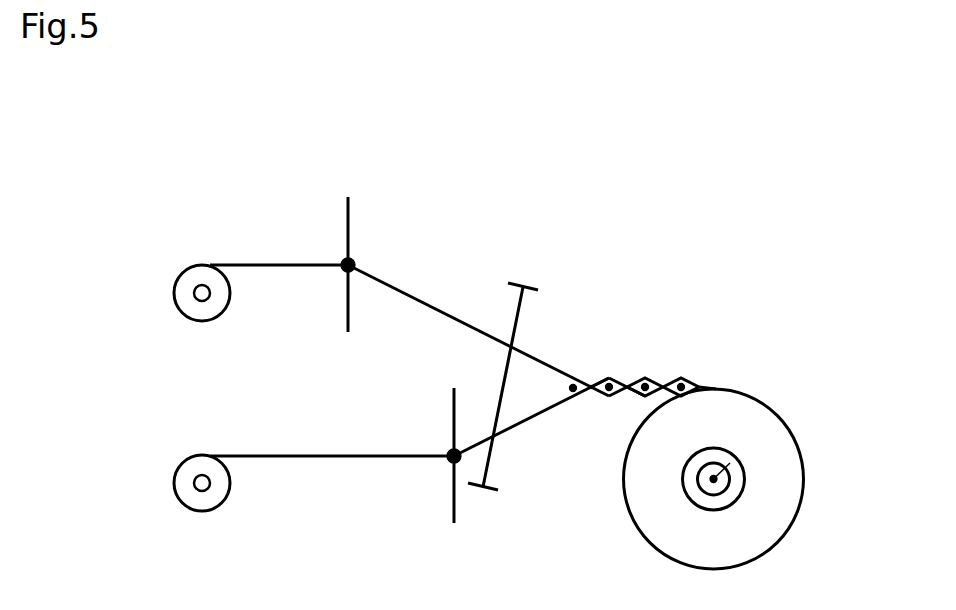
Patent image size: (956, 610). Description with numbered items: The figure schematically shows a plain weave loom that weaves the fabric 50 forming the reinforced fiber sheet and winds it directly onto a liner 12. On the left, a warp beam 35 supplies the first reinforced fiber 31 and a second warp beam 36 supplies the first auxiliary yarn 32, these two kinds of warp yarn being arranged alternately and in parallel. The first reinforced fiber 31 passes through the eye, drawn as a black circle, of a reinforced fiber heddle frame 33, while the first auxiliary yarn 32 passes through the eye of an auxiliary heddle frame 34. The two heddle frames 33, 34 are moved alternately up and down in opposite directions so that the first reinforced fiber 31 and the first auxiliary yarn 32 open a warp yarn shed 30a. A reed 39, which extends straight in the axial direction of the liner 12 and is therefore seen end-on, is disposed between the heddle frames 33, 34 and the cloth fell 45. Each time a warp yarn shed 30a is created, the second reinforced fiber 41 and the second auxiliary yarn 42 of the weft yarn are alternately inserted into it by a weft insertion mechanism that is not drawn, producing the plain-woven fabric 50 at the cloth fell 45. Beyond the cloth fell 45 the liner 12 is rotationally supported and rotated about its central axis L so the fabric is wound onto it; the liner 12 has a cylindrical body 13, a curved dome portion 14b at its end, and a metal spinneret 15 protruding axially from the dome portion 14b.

The liner 12 is at (757, 562).
The cylindrical body 13 is at (773, 403).
The dome portion 14b is at (773, 520).
The spinneret 15 is at (688, 495).
The warp yarn shed 30a is at (565, 385).
The first reinforced fiber 31 is at (420, 299).
The first auxiliary yarn 32 is at (342, 458).
The reinforced fiber heddle frame 33 is at (345, 218).
The auxiliary heddle frame 34 is at (453, 500).
The warp beam 35 is at (210, 292).
The warp beam 36 is at (210, 482).
The reed 39 is at (516, 310).
The second reinforced fiber 41 is at (607, 399).
The second auxiliary yarn 42 is at (650, 400).
The cloth fell 45 is at (591, 385).
The fabric 50 is at (656, 383).
The central axis L is at (745, 463).